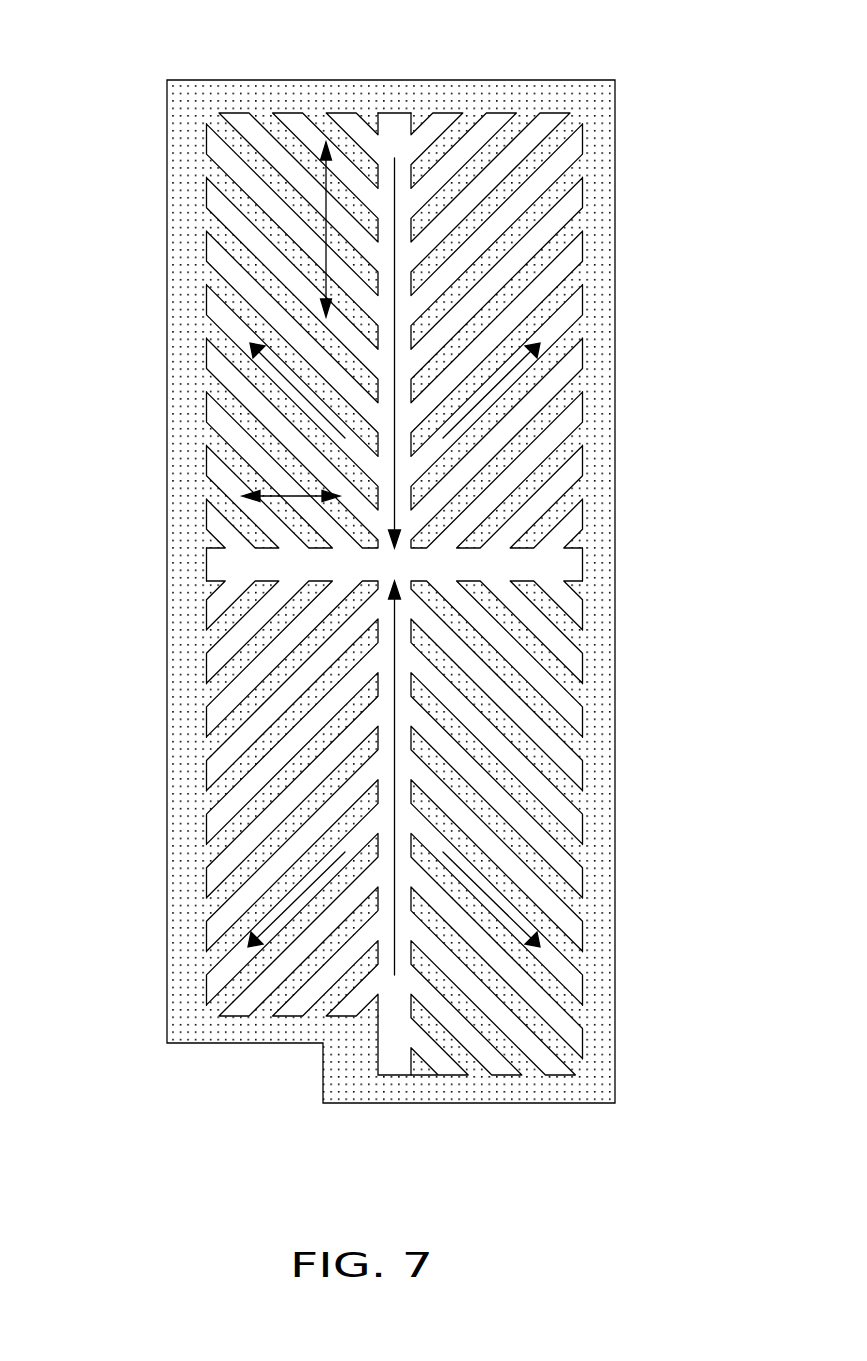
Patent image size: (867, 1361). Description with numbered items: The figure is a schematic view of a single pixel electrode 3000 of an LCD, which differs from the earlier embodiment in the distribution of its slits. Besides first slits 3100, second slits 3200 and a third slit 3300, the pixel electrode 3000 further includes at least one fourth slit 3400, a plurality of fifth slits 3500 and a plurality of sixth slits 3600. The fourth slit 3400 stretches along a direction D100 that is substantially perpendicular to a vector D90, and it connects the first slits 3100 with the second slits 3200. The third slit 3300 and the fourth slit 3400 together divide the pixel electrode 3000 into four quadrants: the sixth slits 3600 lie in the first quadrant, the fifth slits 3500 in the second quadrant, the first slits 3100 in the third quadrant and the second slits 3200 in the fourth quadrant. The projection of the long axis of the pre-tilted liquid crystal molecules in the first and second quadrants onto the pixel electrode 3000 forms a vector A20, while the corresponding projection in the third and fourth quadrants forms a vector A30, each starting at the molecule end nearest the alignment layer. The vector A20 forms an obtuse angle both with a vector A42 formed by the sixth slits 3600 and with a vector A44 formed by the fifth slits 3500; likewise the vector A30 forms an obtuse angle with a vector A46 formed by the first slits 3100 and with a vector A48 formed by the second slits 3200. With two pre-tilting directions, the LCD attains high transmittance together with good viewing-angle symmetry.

The pixel electrode 3000 is at (597, 1023).
The first slits 3100 is at (250, 740).
The second slits 3200 is at (562, 705).
The third slit 3300 is at (385, 167).
The fourth slit 3400 is at (507, 567).
The fifth slits 3500 is at (215, 253).
The sixth slits 3600 is at (540, 130).
The vector A20 is at (396, 210).
The vector A30 is at (395, 738).
The vector A42 is at (499, 382).
The vector A44 is at (290, 382).
The vector A46 is at (285, 908).
The vector A48 is at (503, 910).
The vector D90 is at (323, 202).
The direction D100 is at (290, 492).